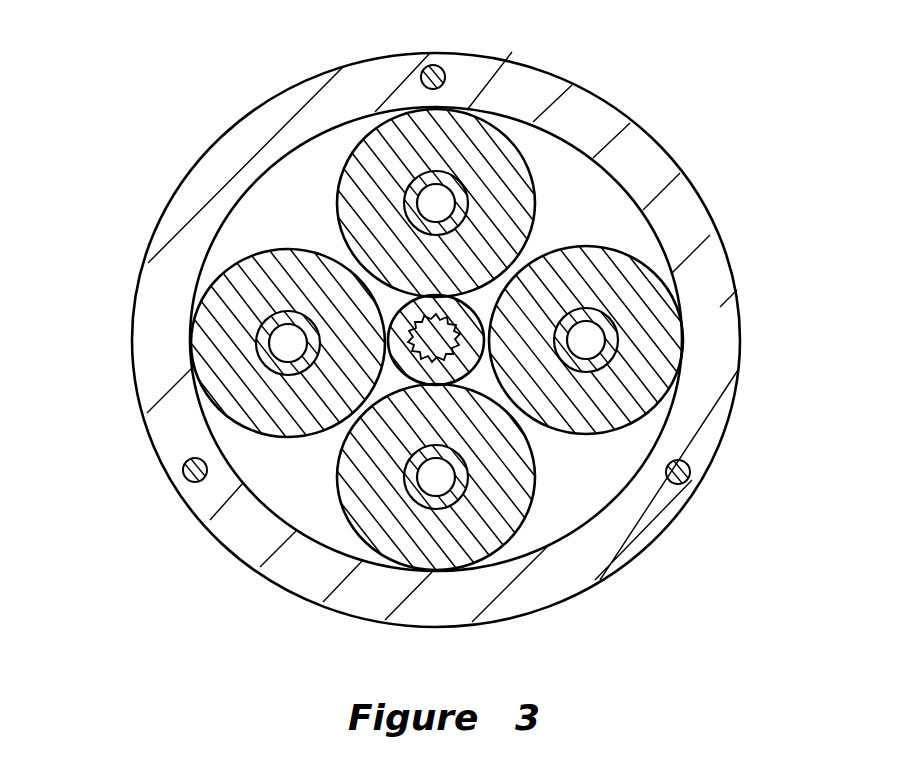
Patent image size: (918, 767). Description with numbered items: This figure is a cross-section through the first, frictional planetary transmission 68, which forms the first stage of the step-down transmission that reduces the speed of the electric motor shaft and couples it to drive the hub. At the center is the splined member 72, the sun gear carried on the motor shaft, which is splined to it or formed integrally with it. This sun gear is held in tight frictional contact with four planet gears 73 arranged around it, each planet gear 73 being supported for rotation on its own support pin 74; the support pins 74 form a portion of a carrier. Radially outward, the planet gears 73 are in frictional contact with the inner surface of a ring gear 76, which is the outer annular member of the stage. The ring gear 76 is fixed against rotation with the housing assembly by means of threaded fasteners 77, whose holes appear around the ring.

The first frictional planetary transmission 68 is at (103, 305).
The splined drive shaft 72 is at (450, 312).
The planet gears 73 is at (513, 168).
The support pins 74 is at (437, 176).
The ring gear 76 is at (723, 418).
The threaded fasteners 77 is at (183, 476).